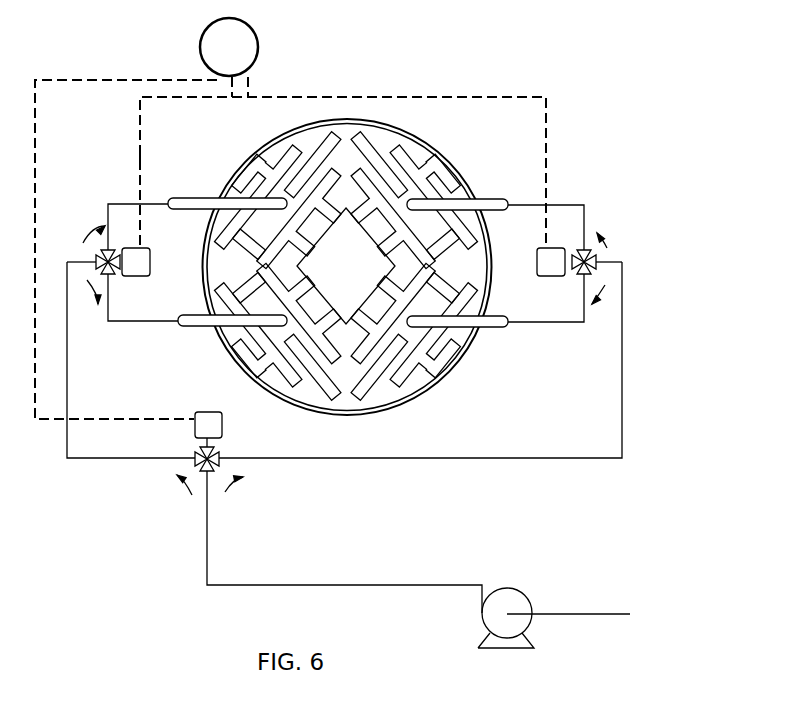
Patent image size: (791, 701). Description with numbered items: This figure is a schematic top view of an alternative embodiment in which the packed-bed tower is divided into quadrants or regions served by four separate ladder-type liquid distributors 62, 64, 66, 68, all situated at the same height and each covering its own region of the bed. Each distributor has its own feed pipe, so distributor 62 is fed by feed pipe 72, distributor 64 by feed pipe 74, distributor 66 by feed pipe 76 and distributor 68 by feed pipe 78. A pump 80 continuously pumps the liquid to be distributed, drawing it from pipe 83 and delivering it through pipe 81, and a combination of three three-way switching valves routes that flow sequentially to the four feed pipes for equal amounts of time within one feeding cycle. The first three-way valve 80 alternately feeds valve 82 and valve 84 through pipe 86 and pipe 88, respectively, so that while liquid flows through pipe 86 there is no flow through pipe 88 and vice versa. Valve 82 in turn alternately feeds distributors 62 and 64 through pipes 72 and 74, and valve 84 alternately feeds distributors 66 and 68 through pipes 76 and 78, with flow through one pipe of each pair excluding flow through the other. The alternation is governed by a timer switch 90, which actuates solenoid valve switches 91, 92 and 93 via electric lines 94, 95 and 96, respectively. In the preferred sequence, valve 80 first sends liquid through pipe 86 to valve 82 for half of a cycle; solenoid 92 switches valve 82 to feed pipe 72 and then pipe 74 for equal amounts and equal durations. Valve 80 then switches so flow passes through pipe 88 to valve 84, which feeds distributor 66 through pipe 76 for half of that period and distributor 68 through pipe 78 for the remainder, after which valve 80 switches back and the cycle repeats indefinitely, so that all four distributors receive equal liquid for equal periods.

The ladder-type liquid distributor 62 is at (300, 150).
The ladder-type liquid distributor 64 is at (297, 382).
The ladder-type liquid distributor 66 is at (397, 155).
The ladder-type liquid distributor 68 is at (388, 380).
The feed pipe 72 is at (212, 197).
The feed pipe 74 is at (230, 328).
The feed pipe 76 is at (487, 172).
The feed pipe 78 is at (495, 330).
The pump and 3-way switching valve 80 is at (200, 455).
The pipe 81 is at (296, 558).
The 3-way switching valve 82 is at (96, 258).
The pipe 83 is at (622, 576).
The 3-way switching valve 84 is at (641, 207).
The pipe 86 is at (92, 460).
The pipe 88 is at (402, 460).
The timer switch 90 is at (258, 33).
The solenoid valve switch 91 is at (204, 410).
The solenoid valve switch 92 is at (170, 283).
The solenoid valve switch 93 is at (548, 278).
The electric line 94 is at (63, 79).
The electric line 95 is at (140, 146).
The electric line 96 is at (440, 50).